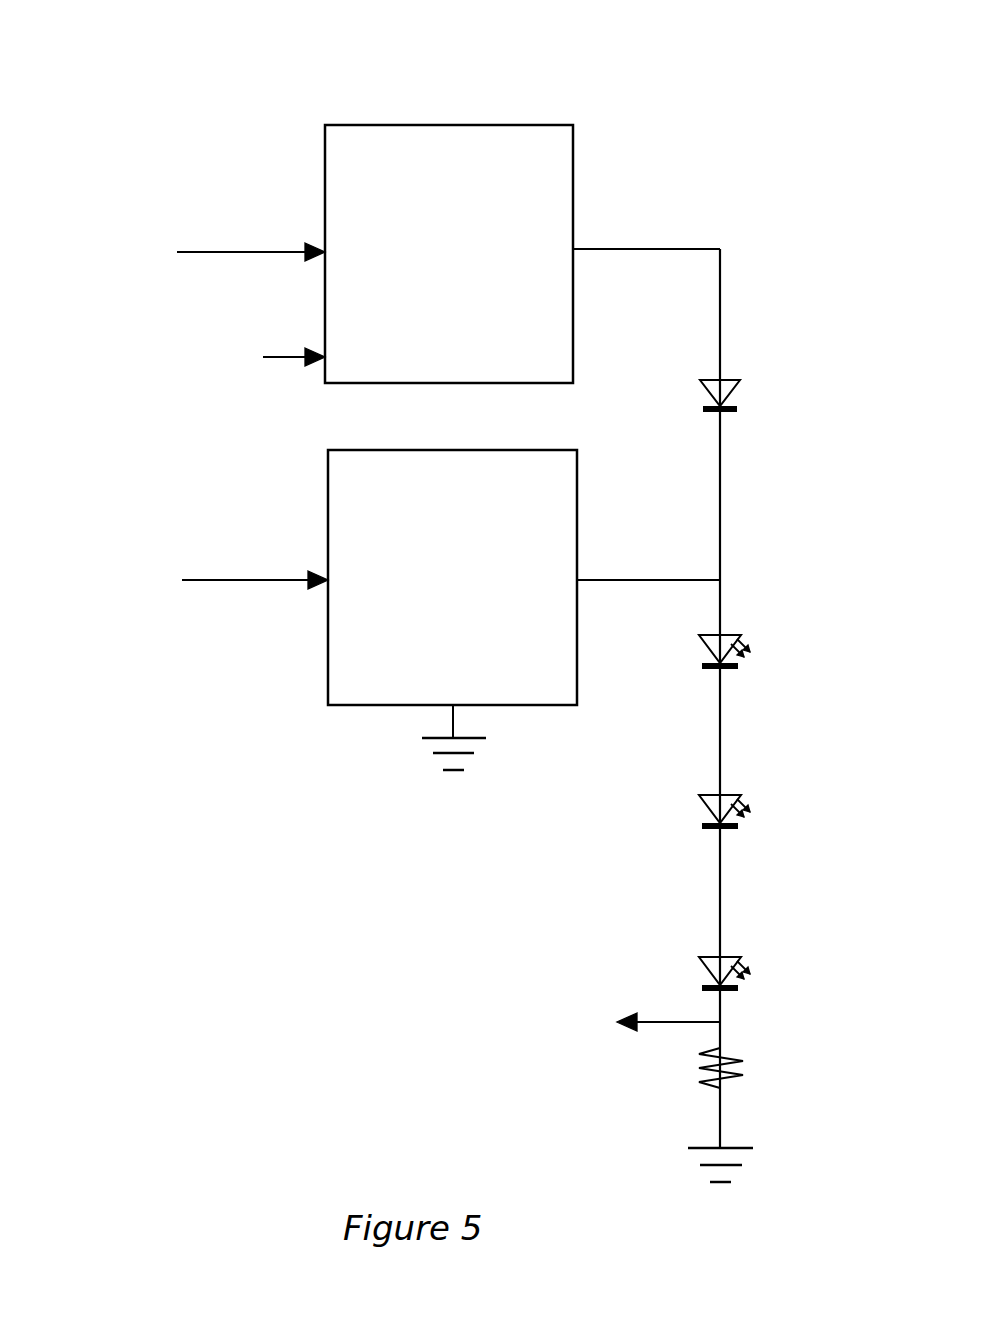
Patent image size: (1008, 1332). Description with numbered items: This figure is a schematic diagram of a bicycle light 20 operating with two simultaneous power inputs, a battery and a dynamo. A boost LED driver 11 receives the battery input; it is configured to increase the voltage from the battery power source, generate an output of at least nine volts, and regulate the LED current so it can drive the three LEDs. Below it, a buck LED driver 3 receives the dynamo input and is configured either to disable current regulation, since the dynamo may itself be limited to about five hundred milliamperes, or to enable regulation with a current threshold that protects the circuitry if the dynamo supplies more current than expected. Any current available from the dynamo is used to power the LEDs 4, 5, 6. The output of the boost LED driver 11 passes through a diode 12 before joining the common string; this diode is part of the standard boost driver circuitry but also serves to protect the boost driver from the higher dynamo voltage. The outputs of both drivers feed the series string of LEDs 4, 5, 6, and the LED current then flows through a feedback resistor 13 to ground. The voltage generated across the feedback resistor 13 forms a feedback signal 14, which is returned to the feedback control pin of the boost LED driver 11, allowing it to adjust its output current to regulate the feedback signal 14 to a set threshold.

The bicycle light 20 is at (296, 973).
The boost LED driver 11 is at (388, 123).
The buck LED driver 3 is at (392, 706).
The diode 12 is at (744, 389).
The LED 4 is at (762, 648).
The LED 5 is at (770, 798).
The LED 6 is at (765, 953).
The feedback resistor 13 is at (752, 1065).
The feedback signal 14 is at (570, 1037).